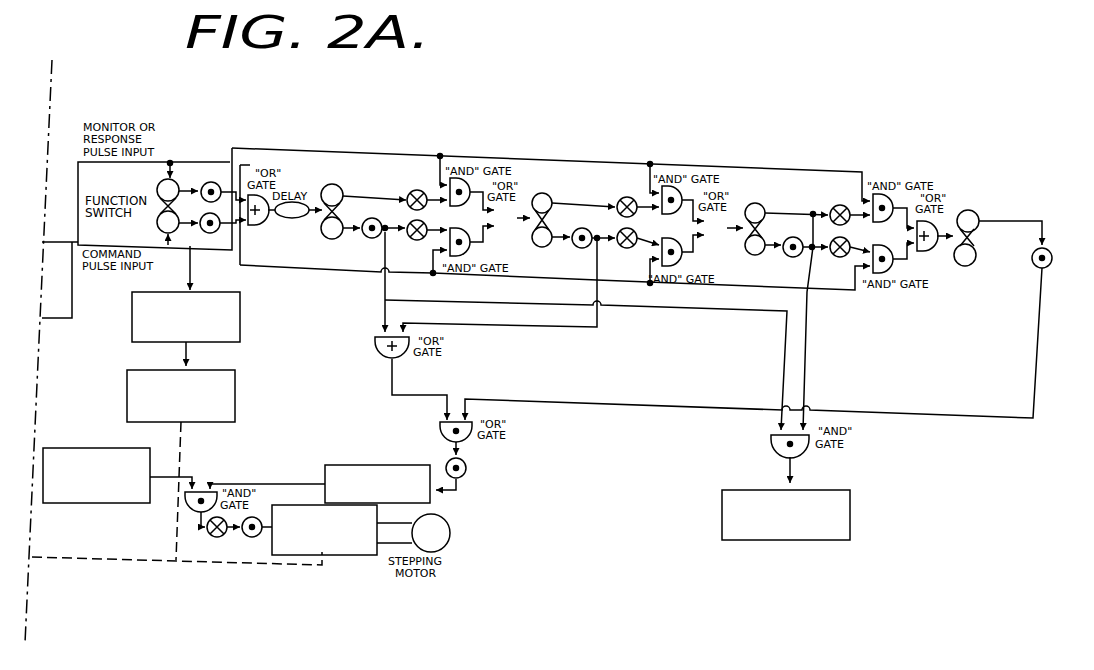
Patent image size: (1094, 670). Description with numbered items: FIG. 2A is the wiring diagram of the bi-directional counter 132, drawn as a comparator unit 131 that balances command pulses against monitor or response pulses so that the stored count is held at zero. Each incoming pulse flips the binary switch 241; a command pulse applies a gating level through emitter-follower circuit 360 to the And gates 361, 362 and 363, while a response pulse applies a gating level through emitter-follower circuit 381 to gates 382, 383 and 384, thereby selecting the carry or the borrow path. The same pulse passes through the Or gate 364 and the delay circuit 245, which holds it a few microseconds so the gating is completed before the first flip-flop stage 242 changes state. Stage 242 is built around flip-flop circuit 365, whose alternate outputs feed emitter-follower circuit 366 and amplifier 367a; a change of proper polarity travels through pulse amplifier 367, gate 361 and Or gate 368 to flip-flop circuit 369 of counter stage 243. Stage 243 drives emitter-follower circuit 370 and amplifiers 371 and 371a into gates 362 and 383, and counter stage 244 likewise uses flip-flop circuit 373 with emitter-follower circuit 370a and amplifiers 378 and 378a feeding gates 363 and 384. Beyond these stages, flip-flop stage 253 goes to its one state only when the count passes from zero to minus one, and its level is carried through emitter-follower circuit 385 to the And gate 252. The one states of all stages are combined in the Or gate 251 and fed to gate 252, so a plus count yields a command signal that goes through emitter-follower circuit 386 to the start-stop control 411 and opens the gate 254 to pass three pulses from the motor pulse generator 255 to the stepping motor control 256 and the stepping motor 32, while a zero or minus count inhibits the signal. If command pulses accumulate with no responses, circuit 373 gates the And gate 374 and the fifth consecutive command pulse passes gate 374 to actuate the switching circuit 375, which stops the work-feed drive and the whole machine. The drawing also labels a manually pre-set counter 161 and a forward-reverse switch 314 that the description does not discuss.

The pulse comparator unit 131 is at (448, 136).
The bi-directional counter 132 is at (215, 122).
The binary switch 241 is at (157, 208).
The emitter-follower circuit 381 is at (207, 181).
The emitter-follower circuit 360 is at (211, 234).
The Or gate 364 is at (264, 224).
The delay circuit 245 is at (297, 218).
The counter flip-flop stage 242 is at (324, 250).
The flip-flop or binary counter circuit 365 is at (340, 179).
The emitter-follower circuit 366 is at (373, 239).
The pulse amplifier circuit 367 is at (410, 222).
The amplifier 367a is at (413, 191).
The gate 382 is at (472, 204).
The And gate 361 is at (470, 247).
The flip-flop circuit 369 is at (545, 193).
The Or gate 368 is at (540, 246).
The counter stage 243 is at (553, 250).
The emitter-follower circuit 370 is at (588, 216).
The amplifier 371 is at (627, 248).
The mixer 371a is at (624, 196).
The gate 383 is at (682, 212).
The And gate 362 is at (682, 258).
The flip-flop circuit 373 is at (768, 200).
The counter flip-flop stage 244 is at (780, 258).
The pulse circuit 370a is at (793, 257).
The amplifier 378a is at (840, 205).
The amplifier 378 is at (840, 257).
The gate 384 is at (890, 220).
The And gate 363 is at (893, 264).
The flip-flop stage 253 is at (963, 273).
The emitter-follower circuit 385 is at (1052, 255).
The manually pre-set counter 161 is at (240, 323).
The forward reverse switch 314 is at (235, 400).
The motor pulse generator 255 is at (110, 448).
The And gate 254 is at (186, 502).
The stepping motor control 256 is at (366, 556).
The stepping motor 32 is at (436, 521).
The start-stop control 411 is at (350, 465).
The Or gate 251 is at (377, 350).
The And gate 252 is at (440, 432).
The emitter-follower circuit 386 is at (467, 468).
The And gate 374 is at (773, 447).
The switching circuit 375 is at (850, 517).